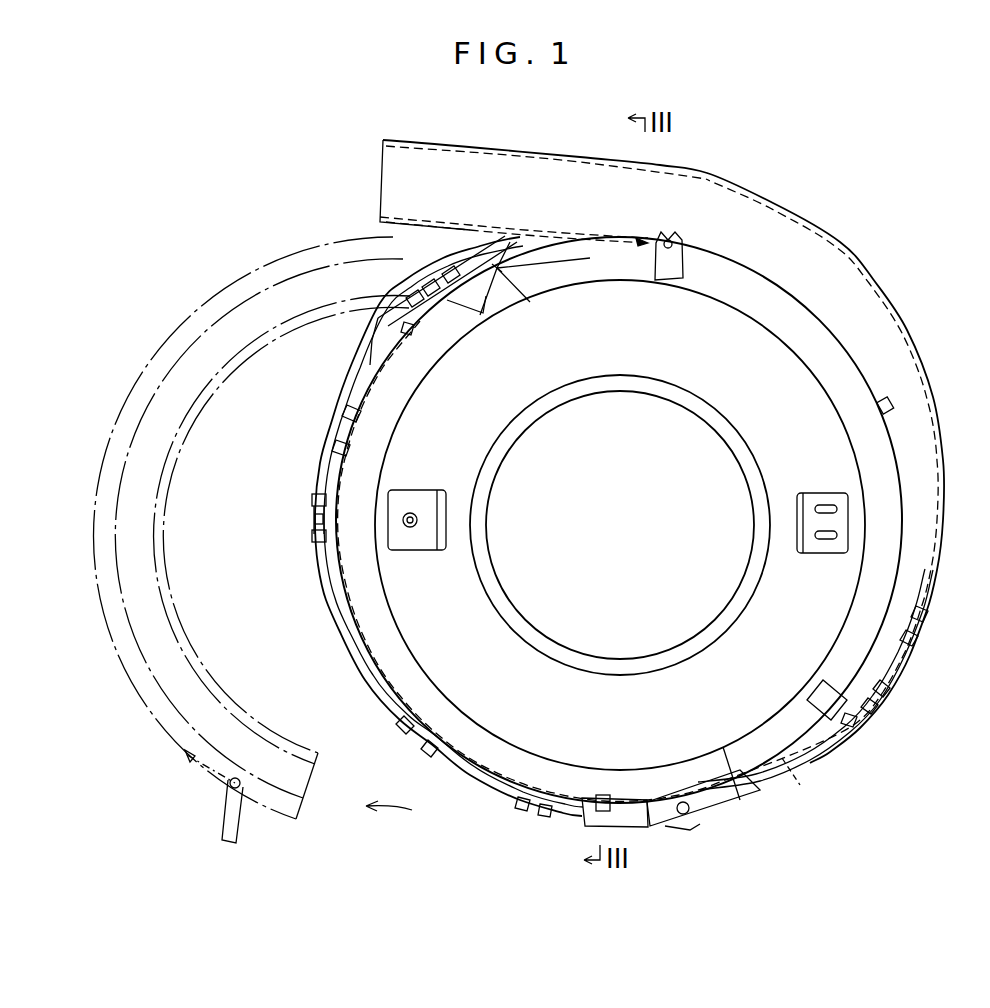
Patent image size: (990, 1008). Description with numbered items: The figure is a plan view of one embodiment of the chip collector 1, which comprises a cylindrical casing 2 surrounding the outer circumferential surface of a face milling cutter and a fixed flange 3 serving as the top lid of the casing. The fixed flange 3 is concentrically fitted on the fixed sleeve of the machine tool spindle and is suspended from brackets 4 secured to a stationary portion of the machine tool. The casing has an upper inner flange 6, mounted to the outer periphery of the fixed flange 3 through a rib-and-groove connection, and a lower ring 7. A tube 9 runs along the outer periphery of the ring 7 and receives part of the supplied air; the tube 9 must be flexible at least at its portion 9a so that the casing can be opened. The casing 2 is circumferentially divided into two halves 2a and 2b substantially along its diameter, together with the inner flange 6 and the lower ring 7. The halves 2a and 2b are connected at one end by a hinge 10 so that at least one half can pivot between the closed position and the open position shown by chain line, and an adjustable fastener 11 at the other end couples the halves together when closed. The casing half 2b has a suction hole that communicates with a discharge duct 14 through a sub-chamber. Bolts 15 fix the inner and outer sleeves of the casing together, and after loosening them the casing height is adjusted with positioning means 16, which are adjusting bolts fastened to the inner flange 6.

The chip collector 1 is at (845, 226).
The cylindrical casing 2 is at (316, 586).
The casing half 2a is at (322, 548).
The casing half 2b is at (800, 785).
The fixed flange 3 is at (438, 657).
The brackets 4 is at (420, 553).
The upper inner flange 6 is at (752, 745).
The lower ring 7 is at (575, 822).
The tube 9 is at (472, 790).
The flexible portion of tube 9a is at (497, 268).
The hinge 10 is at (499, 270).
The adjustable fastener 11 is at (680, 820).
The discharge duct 14 is at (498, 168).
The bolts 15 is at (890, 404).
The positioning means 16 is at (669, 240).